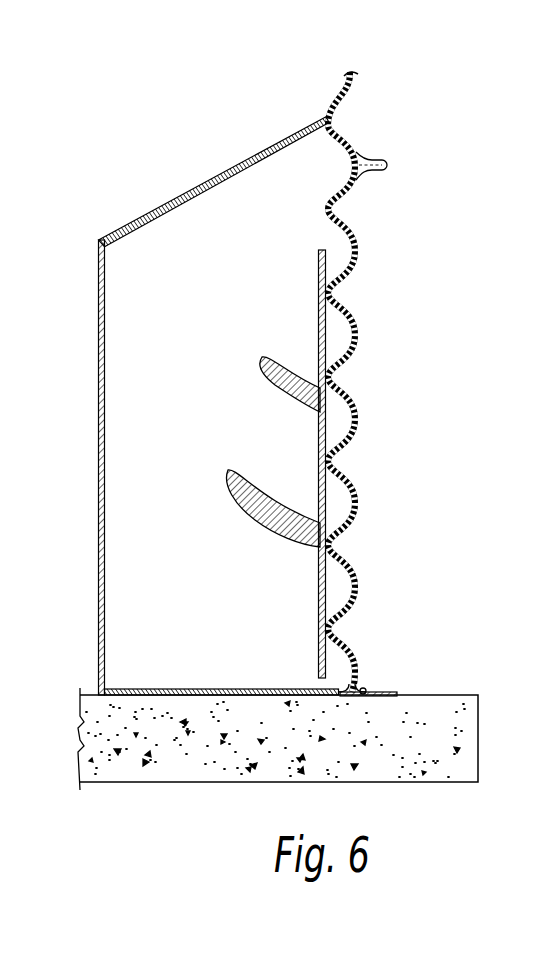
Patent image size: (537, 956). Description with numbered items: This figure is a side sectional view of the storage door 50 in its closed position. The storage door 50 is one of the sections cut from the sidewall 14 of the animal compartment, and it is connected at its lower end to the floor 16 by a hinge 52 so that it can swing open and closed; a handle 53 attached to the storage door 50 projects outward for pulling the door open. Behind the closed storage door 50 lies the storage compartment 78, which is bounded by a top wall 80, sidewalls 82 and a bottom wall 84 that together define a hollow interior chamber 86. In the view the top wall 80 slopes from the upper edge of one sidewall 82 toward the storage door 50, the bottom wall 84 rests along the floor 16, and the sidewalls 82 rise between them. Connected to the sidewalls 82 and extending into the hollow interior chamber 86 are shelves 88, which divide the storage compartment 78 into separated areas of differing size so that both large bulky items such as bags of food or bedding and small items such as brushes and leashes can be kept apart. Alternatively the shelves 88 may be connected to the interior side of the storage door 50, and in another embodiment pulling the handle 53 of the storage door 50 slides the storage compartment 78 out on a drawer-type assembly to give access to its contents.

The sidewall 14 is at (344, 86).
The floor 16 is at (93, 693).
The storage door 50 is at (357, 313).
The hinge 52 is at (383, 692).
The handle 53 is at (374, 160).
The storage compartment 78 is at (204, 116).
The top wall 80 is at (212, 177).
The sidewalls 82 is at (98, 598).
The bottom wall 84 is at (197, 689).
The hollow interior chamber 86 is at (185, 269).
The shelves 88 is at (260, 362).